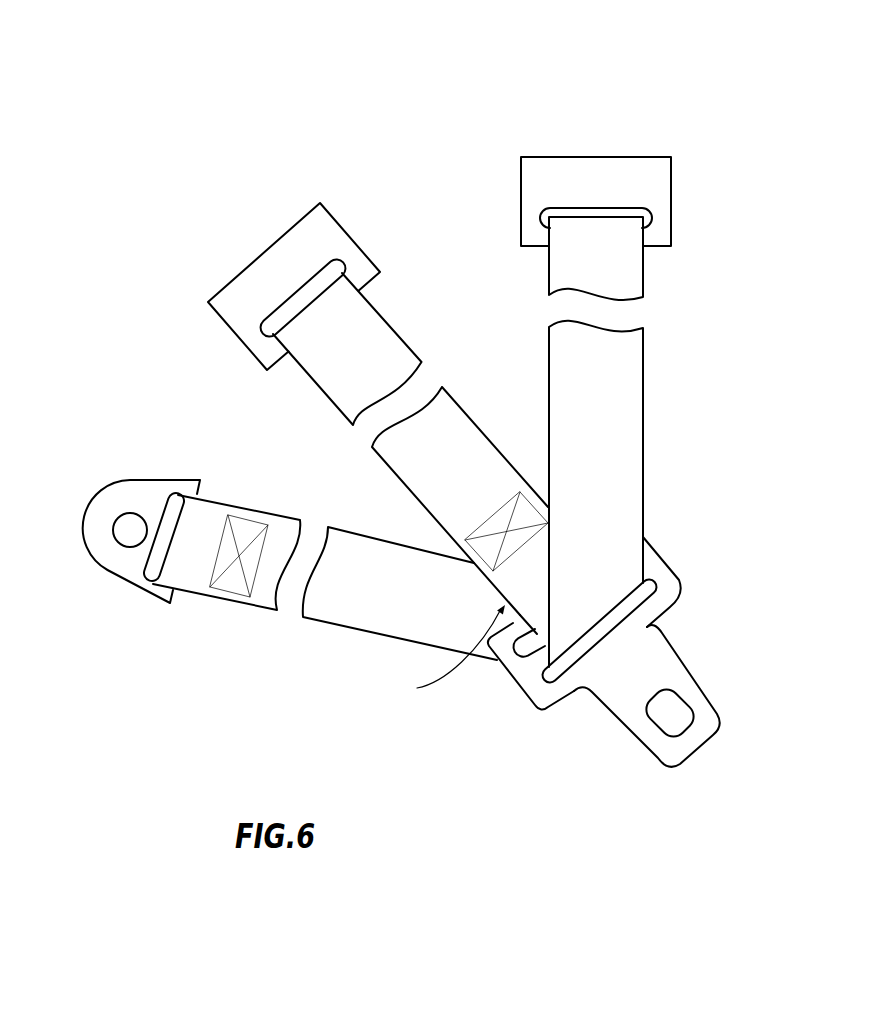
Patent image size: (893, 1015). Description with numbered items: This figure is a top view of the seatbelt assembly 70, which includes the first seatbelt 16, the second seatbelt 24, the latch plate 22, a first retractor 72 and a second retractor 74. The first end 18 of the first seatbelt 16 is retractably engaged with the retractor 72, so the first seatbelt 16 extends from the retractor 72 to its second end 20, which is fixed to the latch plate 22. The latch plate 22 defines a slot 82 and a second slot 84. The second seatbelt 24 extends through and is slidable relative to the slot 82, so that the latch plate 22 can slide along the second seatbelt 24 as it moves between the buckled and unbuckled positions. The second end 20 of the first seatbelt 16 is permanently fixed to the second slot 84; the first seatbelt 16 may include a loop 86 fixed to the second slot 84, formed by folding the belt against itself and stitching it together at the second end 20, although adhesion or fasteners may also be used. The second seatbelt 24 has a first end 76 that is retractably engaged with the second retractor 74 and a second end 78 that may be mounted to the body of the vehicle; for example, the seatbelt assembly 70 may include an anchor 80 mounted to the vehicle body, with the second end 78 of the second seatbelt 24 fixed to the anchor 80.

The seatbelt assembly 70 is at (504, 58).
The second retractor 74 is at (557, 158).
The first end 76 is at (598, 214).
The second seatbelt 24 is at (645, 338).
The retractor 72 is at (228, 280).
The first end 18 is at (317, 280).
The first seatbelt 16 is at (400, 337).
The second end 20 is at (537, 655).
The anchor 80 is at (115, 578).
The second end 78 is at (170, 503).
The slot 82 is at (651, 582).
The latch plate 22 is at (690, 672).
The second slot 84 is at (513, 652).
The loop 86 is at (448, 654).